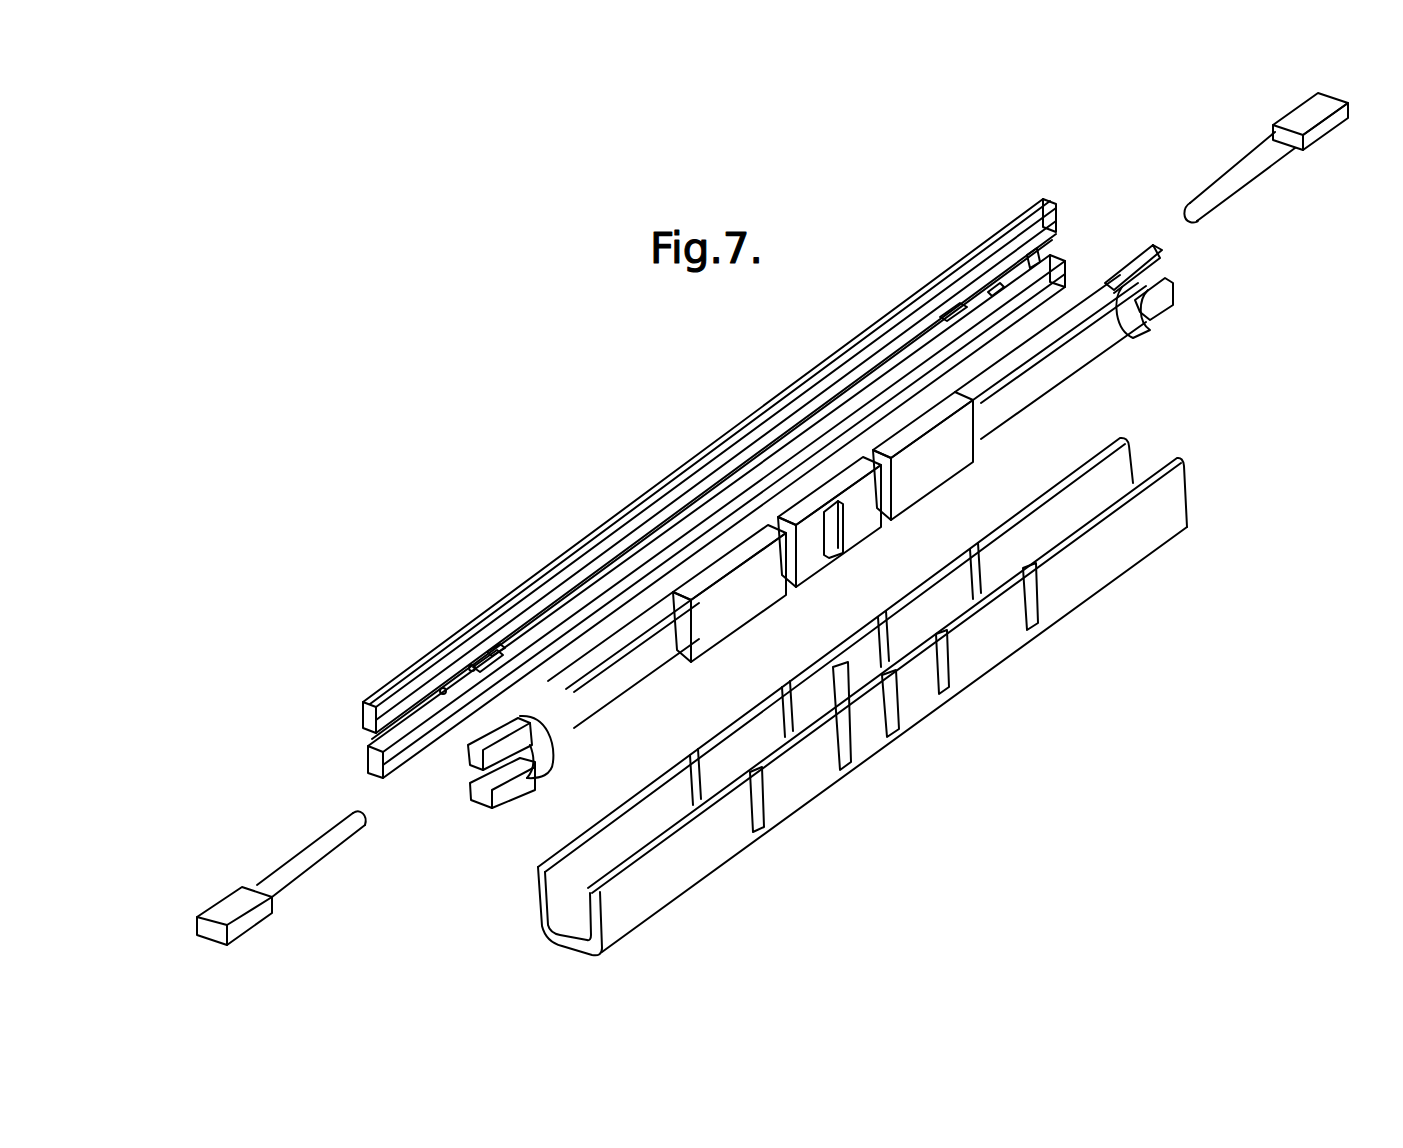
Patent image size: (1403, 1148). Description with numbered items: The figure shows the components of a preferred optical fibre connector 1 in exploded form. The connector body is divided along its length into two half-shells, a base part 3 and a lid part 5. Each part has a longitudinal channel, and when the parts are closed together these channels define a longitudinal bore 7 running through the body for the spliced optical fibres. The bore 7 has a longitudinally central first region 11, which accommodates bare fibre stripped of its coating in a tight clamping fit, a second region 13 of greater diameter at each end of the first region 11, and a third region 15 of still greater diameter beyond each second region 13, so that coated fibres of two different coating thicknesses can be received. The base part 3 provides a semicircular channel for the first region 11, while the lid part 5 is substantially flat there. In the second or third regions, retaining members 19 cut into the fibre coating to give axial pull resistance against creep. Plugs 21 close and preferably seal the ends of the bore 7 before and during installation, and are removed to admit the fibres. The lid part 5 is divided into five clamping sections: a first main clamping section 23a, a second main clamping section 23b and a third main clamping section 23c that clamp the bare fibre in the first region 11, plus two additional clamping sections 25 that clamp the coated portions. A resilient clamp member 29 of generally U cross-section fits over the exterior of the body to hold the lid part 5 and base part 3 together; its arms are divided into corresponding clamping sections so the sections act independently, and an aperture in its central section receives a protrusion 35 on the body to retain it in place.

The connector 1 is at (578, 328).
The base part 3 is at (495, 605).
The lid part 5 is at (1088, 330).
The longitudinal bore 7 is at (1022, 270).
The first region 11 is at (715, 455).
The second region 13 is at (565, 598).
The third region 15 is at (397, 702).
The retaining member 19 is at (472, 671).
The plug 21 is at (1312, 128).
The first main clamping section 23a is at (728, 598).
The second main clamping section 23b is at (868, 500).
The third main clamping section 23c is at (908, 463).
The additional clamping section 25 is at (583, 702).
The resilient clamp member 29 is at (1165, 490).
The protrusion 35 is at (840, 540).